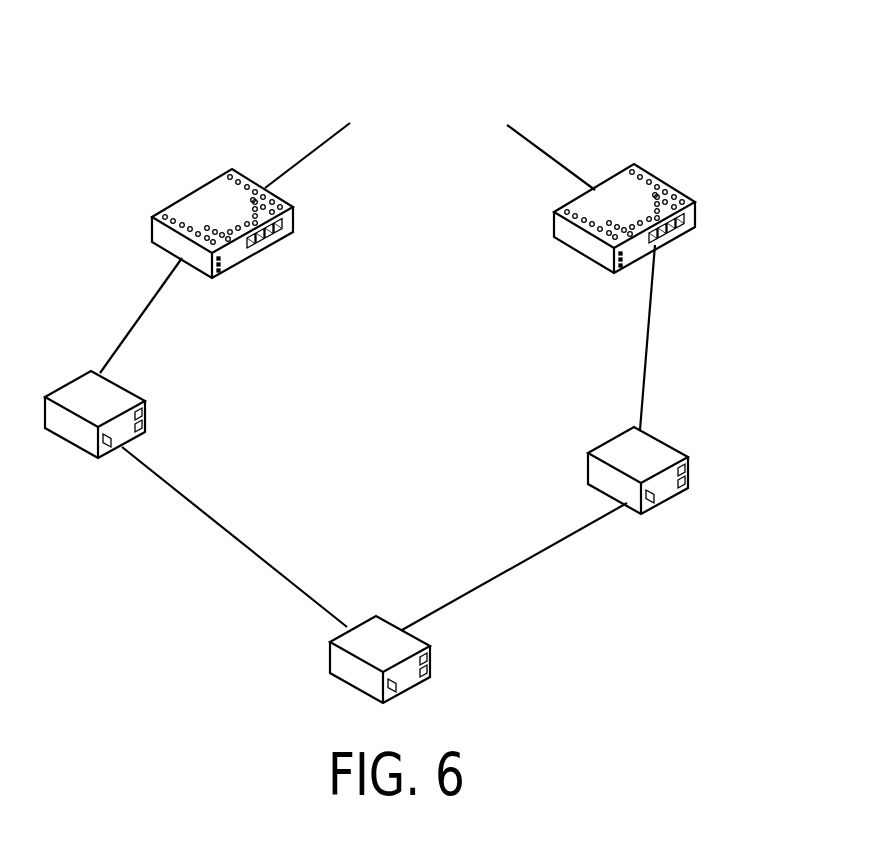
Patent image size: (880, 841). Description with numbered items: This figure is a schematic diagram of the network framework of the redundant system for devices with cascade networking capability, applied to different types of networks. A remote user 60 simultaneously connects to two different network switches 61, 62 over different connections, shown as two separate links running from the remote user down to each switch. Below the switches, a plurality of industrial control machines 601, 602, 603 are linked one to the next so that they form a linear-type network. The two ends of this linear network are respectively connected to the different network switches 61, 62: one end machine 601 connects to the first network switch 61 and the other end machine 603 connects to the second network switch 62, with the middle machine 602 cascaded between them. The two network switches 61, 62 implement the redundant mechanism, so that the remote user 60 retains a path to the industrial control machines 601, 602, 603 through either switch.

The remote user 60 is at (483, 85).
The network switch 61 is at (202, 197).
The network switch 62 is at (658, 178).
The industrial control machine 601 is at (123, 398).
The industrial control machine 602 is at (378, 628).
The industrial control machine 603 is at (618, 452).